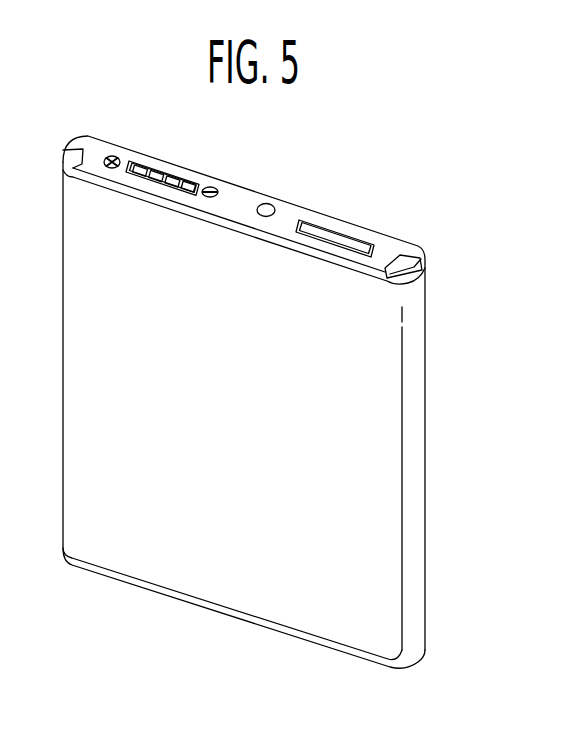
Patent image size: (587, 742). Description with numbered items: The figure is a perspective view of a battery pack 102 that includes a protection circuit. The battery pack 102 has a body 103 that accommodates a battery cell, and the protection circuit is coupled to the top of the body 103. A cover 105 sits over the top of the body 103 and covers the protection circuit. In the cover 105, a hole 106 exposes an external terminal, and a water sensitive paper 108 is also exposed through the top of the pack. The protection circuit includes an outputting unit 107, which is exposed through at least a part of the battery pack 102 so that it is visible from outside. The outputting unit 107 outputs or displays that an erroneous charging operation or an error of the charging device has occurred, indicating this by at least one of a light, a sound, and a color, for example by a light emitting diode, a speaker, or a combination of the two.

The battery pack 102 is at (415, 148).
The body 103 is at (413, 453).
The cover 105 is at (253, 175).
The hole 106 is at (160, 168).
The outputting unit 107 is at (273, 205).
The water sensitive paper 108 is at (348, 238).